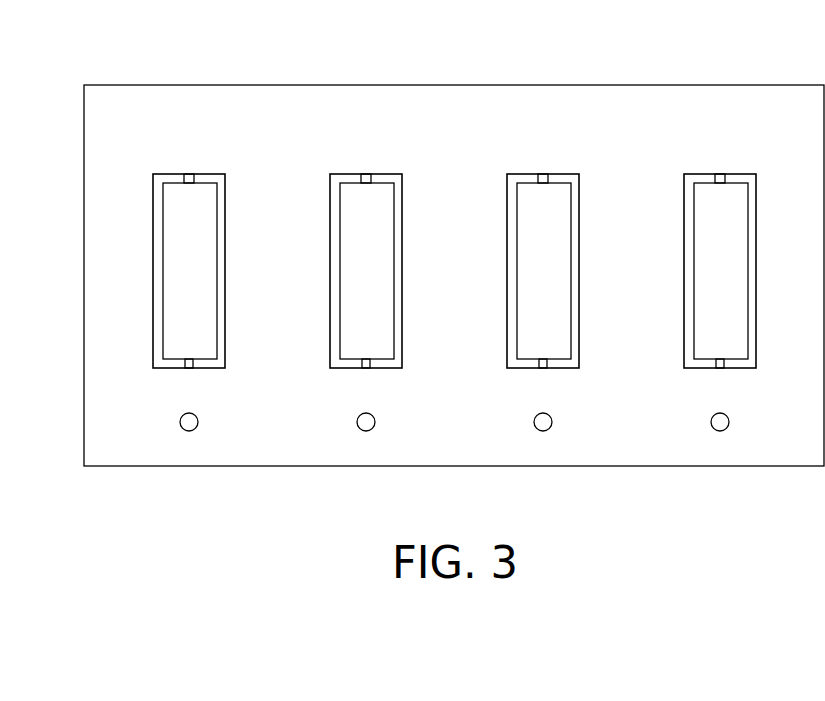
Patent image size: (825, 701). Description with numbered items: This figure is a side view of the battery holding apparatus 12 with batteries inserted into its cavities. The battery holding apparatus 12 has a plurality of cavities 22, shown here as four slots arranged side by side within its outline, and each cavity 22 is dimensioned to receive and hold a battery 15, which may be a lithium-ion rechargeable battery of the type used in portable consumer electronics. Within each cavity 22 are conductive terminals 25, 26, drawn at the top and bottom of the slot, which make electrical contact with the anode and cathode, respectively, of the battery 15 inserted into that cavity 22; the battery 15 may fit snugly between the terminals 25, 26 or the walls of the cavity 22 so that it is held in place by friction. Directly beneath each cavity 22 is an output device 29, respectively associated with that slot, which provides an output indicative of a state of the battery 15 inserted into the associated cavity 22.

The battery holding apparatus 12 is at (727, 85).
The battery 15 is at (203, 283).
The cavity 22 is at (222, 256).
The conductive terminal 25 is at (189, 174).
The conductive terminal 26 is at (189, 368).
The output device 29 is at (189, 412).